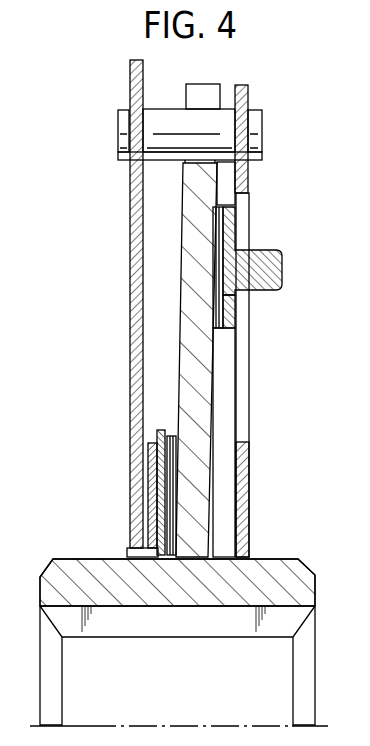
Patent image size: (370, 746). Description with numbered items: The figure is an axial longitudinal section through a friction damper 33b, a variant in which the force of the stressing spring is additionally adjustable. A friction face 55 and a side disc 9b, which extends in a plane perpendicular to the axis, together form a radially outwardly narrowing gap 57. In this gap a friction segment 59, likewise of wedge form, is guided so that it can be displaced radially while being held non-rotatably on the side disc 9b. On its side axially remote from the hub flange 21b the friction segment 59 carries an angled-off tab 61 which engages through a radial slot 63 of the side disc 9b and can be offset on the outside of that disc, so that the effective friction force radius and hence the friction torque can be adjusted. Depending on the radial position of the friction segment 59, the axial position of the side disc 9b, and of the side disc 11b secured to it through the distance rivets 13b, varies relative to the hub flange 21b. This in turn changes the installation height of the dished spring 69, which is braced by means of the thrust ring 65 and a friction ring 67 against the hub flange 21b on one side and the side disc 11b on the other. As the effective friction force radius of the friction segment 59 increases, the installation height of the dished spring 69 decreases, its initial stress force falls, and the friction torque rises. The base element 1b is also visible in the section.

The base body 1b is at (65, 563).
The side disc 9b is at (243, 173).
The side disc 11b is at (137, 183).
The distance rivets 13b is at (161, 118).
The hub flange 21b is at (190, 228).
The friction damper 33b is at (124, 448).
The friction face 55 is at (214, 343).
The gap 57 is at (224, 190).
The friction segment 59 is at (216, 304).
The angled-off tab 61 is at (274, 262).
The radial slot 63 is at (244, 400).
The thrust ring 65 is at (158, 476).
The friction ring 67 is at (160, 441).
The dished spring 69 is at (150, 506).